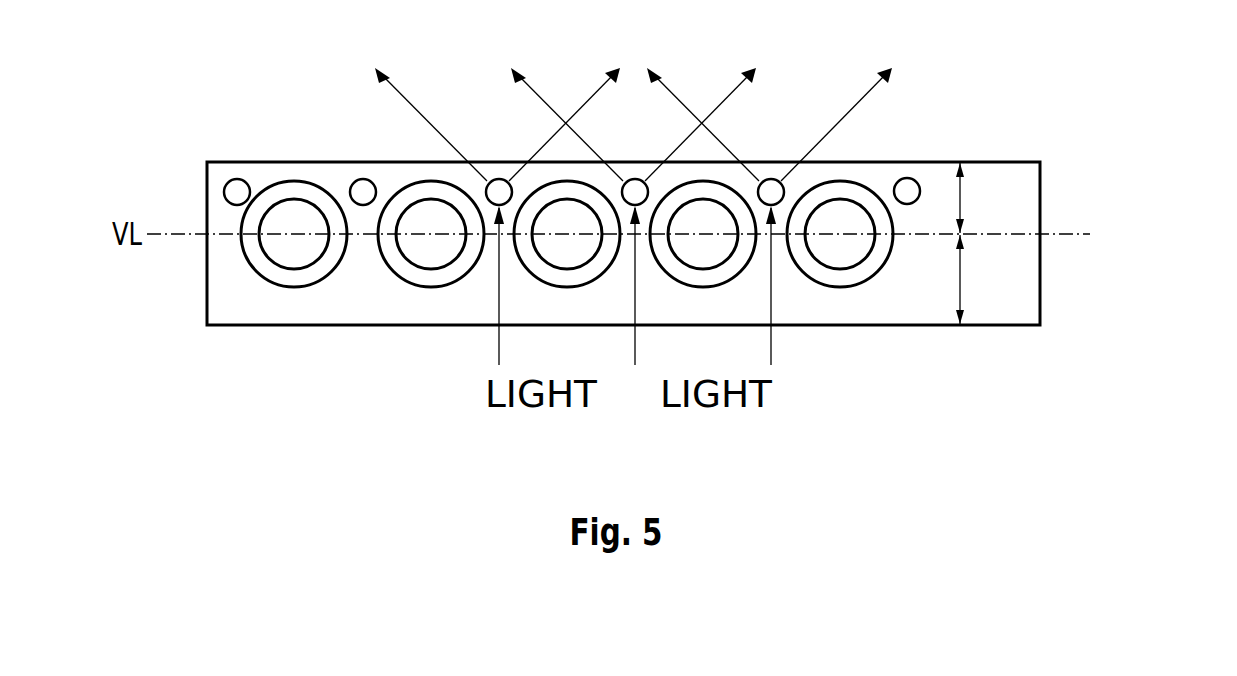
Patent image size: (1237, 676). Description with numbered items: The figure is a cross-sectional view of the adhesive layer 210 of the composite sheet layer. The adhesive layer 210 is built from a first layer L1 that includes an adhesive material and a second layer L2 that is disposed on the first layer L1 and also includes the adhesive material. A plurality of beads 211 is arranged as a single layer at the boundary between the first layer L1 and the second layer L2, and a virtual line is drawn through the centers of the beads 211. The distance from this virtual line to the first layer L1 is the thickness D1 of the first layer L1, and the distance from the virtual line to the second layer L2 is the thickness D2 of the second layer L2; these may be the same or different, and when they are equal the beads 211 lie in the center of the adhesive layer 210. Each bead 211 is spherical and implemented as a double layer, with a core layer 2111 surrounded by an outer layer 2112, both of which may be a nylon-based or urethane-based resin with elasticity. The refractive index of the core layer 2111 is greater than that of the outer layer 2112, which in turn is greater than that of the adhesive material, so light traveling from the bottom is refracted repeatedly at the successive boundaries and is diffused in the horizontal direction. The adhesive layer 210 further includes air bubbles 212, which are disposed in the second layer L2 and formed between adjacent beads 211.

The adhesive layer 210 is at (1127, 197).
The beads 211 is at (550, 331).
The core layer 2111 is at (264, 262).
The outer layer 2112 is at (328, 279).
The air bubbles 212 is at (235, 179).
The thickness of the first layer D1 is at (957, 277).
The thickness of the second layer D2 is at (967, 197).
The first layer L1 is at (1012, 283).
The second layer L2 is at (1012, 198).